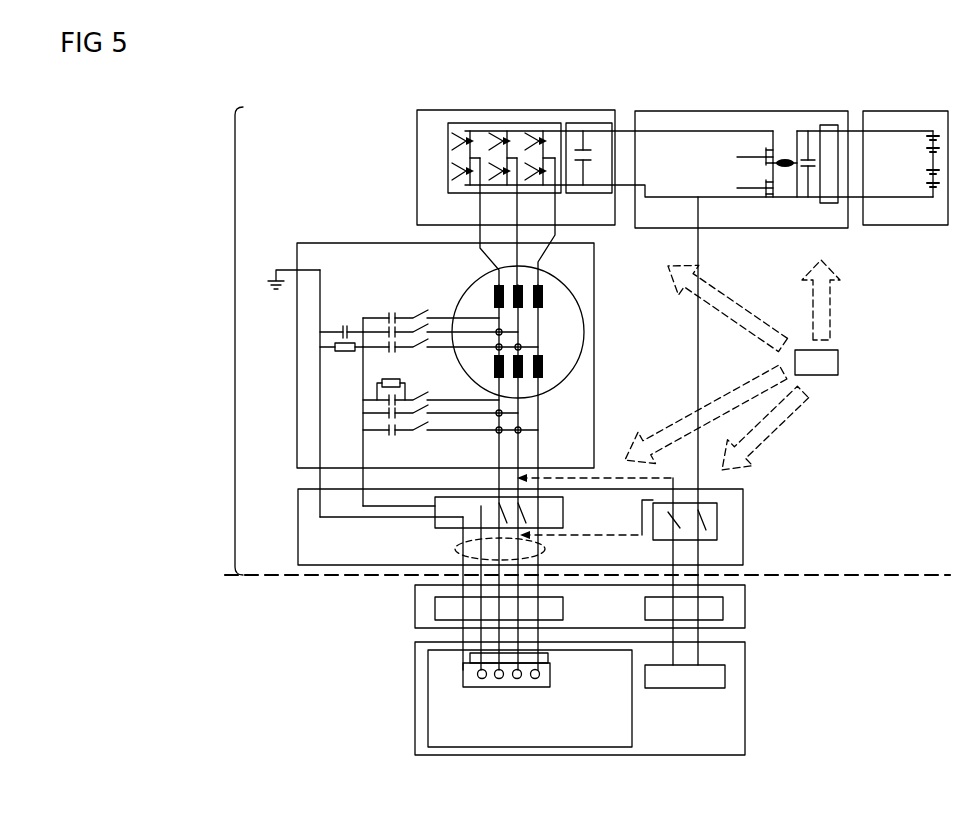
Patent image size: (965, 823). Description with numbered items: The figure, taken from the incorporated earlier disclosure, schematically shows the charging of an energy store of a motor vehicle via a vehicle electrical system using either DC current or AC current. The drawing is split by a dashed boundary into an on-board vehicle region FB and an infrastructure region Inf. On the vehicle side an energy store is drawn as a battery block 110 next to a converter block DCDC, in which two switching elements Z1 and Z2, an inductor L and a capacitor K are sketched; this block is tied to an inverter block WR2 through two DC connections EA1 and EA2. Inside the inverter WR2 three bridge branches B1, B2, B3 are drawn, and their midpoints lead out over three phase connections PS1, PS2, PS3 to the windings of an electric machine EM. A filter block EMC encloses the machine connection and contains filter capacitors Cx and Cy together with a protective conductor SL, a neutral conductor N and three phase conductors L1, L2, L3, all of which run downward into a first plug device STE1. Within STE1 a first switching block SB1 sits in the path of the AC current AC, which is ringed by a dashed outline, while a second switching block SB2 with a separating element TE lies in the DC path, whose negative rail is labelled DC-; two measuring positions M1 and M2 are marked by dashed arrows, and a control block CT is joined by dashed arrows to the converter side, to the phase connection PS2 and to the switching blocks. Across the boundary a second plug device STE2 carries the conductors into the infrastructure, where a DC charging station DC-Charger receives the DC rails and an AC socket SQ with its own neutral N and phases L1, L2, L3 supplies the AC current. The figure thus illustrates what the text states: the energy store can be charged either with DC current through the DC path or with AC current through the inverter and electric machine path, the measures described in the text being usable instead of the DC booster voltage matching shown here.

The vehicle (on-board) system FB is at (221, 341).
The infrastructure Inf is at (587, 590).
The inverter WR2 is at (417, 160).
The first DC terminal EA1 is at (620, 131).
The second DC terminal EA2 is at (625, 187).
The first half bridge B1 is at (468, 115).
The second half bridge B2 is at (505, 115).
The third half bridge B3 is at (544, 115).
The first phase connection PS1 is at (480, 224).
The second phase connection PS2 is at (552, 248).
The third phase connection PS3 is at (555, 224).
The DC-DC converter DCDC is at (784, 150).
The first switch Z1 is at (762, 148).
The second switch Z2 is at (762, 181).
The inductor L is at (786, 157).
The capacitor K is at (808, 170).
The battery 110 is at (902, 111).
The EMC filter EMC is at (471, 380).
The protective conductor SL is at (391, 393).
The neutral conductor N is at (392, 412).
The Y capacitor Cy is at (341, 355).
The X capacitor Cx is at (450, 386).
The electric machine EM is at (585, 318).
The first phase conductor L1 is at (499, 468).
The second phase conductor L2 is at (518, 468).
The third phase conductor L3 is at (538, 470).
The first plug device STE1 is at (522, 473).
The first switching unit SB1 is at (435, 520).
The second switching unit SB2 is at (717, 503).
The separating element TE is at (668, 512).
The AC current AC is at (455, 548).
The first measurement point M1 is at (586, 521).
The second measurement point M2 is at (607, 478).
The negative DC connection DC- is at (700, 530).
The controller CT is at (732, 365).
The second plug device STE2 is at (745, 600).
The DC charging station DC-Charger is at (642, 698).
The AC source / socket SQ is at (553, 686).